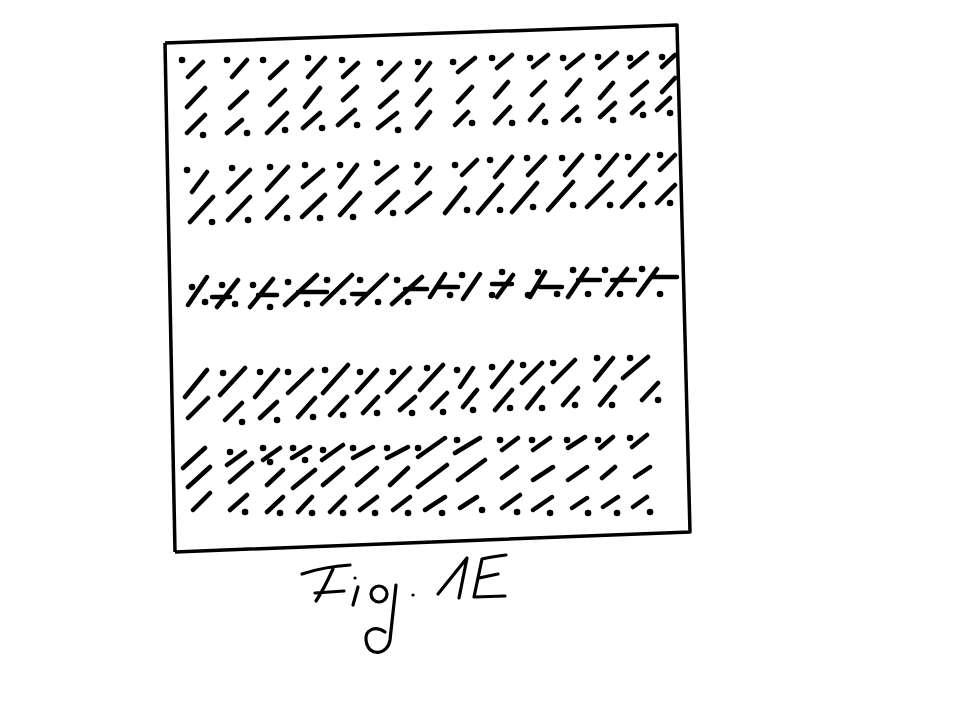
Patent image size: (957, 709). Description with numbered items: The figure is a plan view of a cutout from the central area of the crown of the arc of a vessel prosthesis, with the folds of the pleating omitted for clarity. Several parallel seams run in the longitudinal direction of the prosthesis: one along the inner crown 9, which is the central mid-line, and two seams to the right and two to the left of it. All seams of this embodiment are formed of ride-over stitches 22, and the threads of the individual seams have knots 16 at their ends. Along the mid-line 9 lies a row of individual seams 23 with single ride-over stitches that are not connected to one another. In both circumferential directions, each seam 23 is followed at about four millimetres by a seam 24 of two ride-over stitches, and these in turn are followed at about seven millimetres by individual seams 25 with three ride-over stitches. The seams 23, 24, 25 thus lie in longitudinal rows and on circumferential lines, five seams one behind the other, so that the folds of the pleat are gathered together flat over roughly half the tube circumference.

The inner crown 9 is at (185, 297).
The knots 16 is at (213, 508).
The ride-over stitches 22 is at (677, 80).
The individual seams with single ride-over stitch 23 is at (692, 289).
The seams with two ride-over stitches 24 is at (678, 378).
The individual seams with three ride-over stitches 25 is at (676, 483).